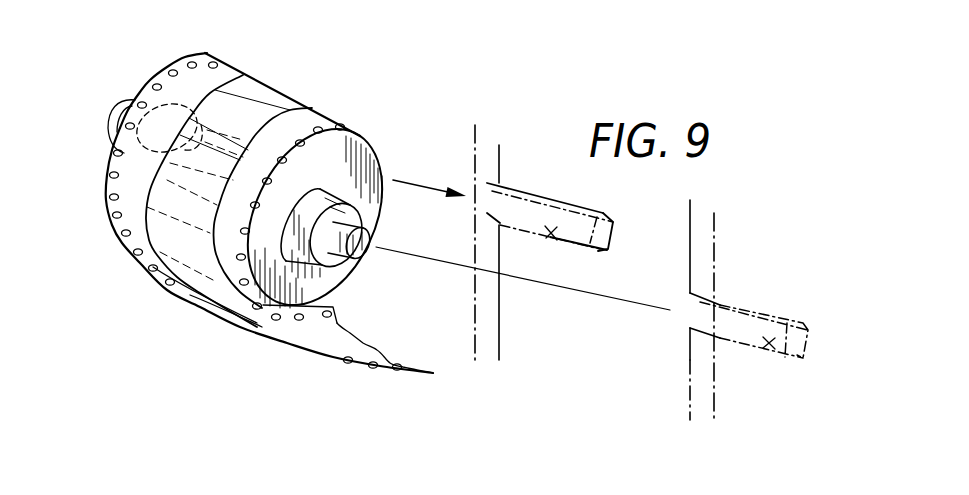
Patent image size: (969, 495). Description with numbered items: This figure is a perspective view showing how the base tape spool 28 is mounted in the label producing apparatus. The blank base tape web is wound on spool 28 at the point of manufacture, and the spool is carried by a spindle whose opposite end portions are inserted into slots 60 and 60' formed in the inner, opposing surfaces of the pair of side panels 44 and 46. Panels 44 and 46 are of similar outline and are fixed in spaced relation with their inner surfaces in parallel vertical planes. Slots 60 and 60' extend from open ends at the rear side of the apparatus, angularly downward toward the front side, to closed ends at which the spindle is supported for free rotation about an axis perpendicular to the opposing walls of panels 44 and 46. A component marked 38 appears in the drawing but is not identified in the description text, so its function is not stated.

The base tape spool 28 is at (342, 154).
The drum shaft 38 is at (368, 249).
The side panel 46 is at (483, 143).
The side panel 44 is at (700, 357).
The slot 60' is at (576, 231).
The slot 60 is at (771, 341).